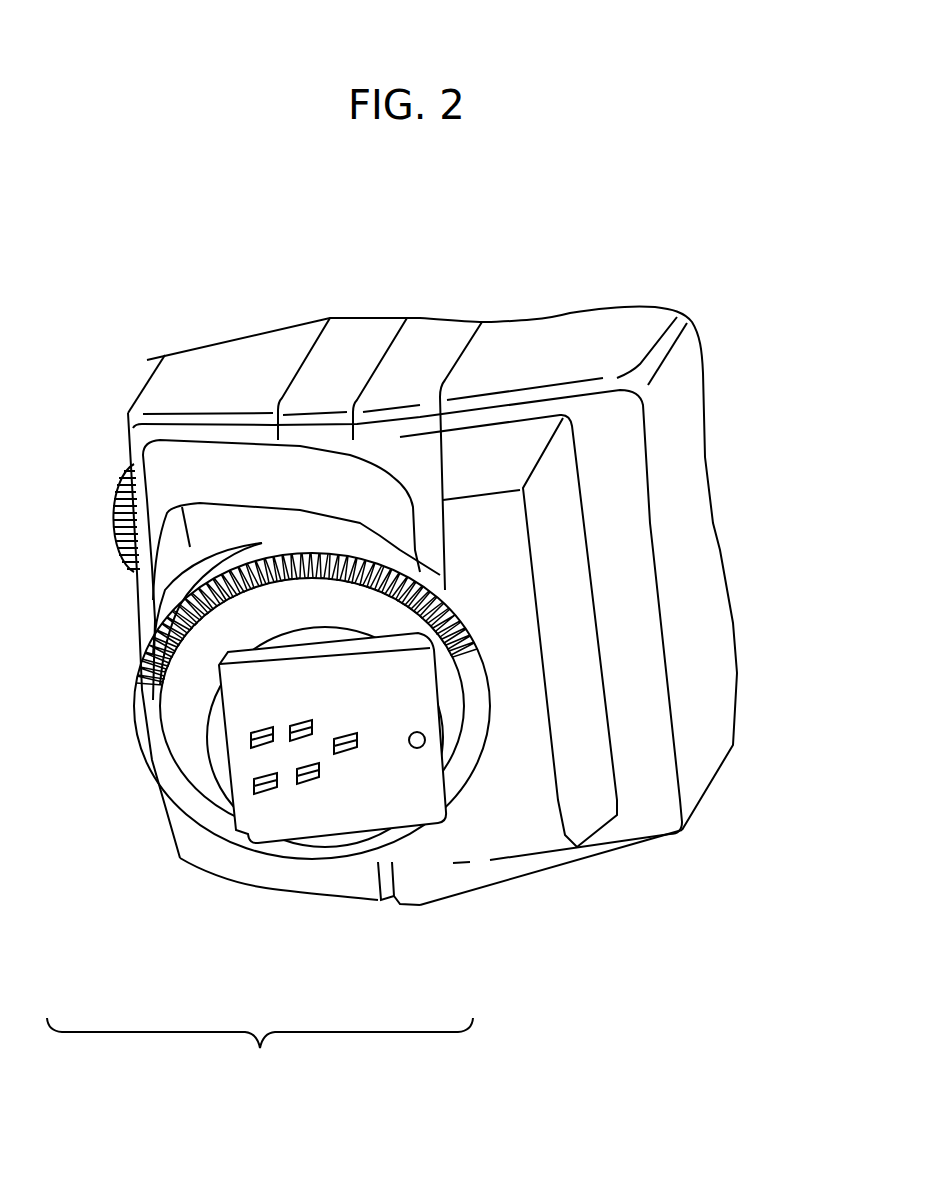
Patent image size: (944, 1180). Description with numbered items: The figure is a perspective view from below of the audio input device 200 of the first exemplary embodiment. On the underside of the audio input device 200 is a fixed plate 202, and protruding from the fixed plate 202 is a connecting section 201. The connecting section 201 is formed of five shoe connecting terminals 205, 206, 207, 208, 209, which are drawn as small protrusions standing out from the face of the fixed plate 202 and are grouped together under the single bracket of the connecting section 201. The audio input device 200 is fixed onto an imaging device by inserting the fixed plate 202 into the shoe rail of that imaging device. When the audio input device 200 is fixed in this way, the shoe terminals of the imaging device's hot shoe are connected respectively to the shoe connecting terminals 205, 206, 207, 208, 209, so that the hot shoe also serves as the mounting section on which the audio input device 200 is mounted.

The audio input device 200 is at (132, 267).
The connecting section 201 is at (260, 1052).
The fixed plate 202 is at (253, 812).
The shoe connecting terminal 205 is at (350, 755).
The shoe connecting terminal 206 is at (301, 786).
The shoe connecting terminal 207 is at (262, 794).
The shoe connecting terminal 208 is at (251, 741).
The shoe connecting terminal 209 is at (307, 738).